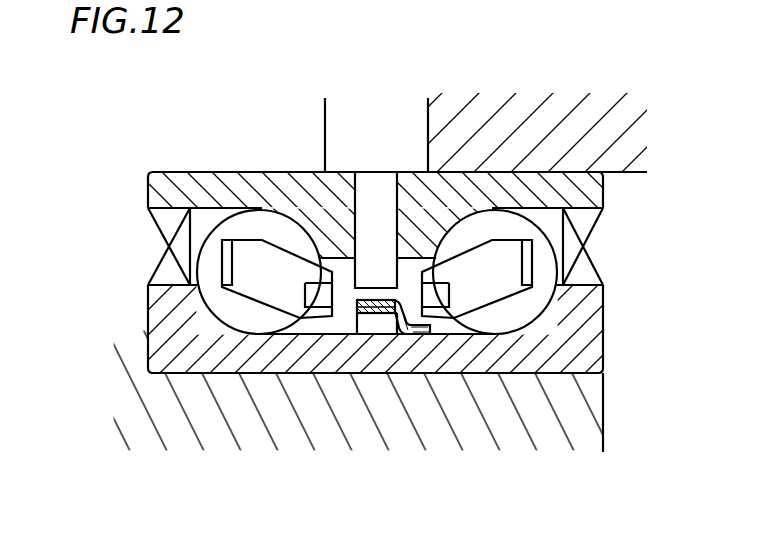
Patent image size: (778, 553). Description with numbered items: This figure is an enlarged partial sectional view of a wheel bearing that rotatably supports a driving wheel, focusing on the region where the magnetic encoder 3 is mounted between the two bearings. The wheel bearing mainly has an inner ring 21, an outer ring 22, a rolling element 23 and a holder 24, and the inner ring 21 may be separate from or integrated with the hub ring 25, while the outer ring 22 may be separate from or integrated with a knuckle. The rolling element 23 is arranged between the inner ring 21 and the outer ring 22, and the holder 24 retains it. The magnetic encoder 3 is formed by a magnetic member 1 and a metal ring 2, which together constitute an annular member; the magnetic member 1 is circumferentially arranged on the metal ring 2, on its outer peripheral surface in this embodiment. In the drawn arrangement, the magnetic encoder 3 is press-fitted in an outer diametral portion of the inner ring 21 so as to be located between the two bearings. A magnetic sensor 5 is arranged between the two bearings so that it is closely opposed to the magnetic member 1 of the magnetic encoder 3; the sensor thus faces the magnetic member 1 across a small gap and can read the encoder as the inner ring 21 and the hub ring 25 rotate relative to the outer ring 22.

The magnetic member 1 is at (356, 298).
The metal ring 2 is at (410, 336).
The magnetic encoder 3 is at (410, 318).
The magnetic sensor 5 is at (375, 208).
The inner ring 21 is at (585, 352).
The outer ring 22 is at (595, 191).
The rolling element 23 is at (543, 260).
The holder 24 is at (500, 287).
The hub ring 25 is at (585, 405).